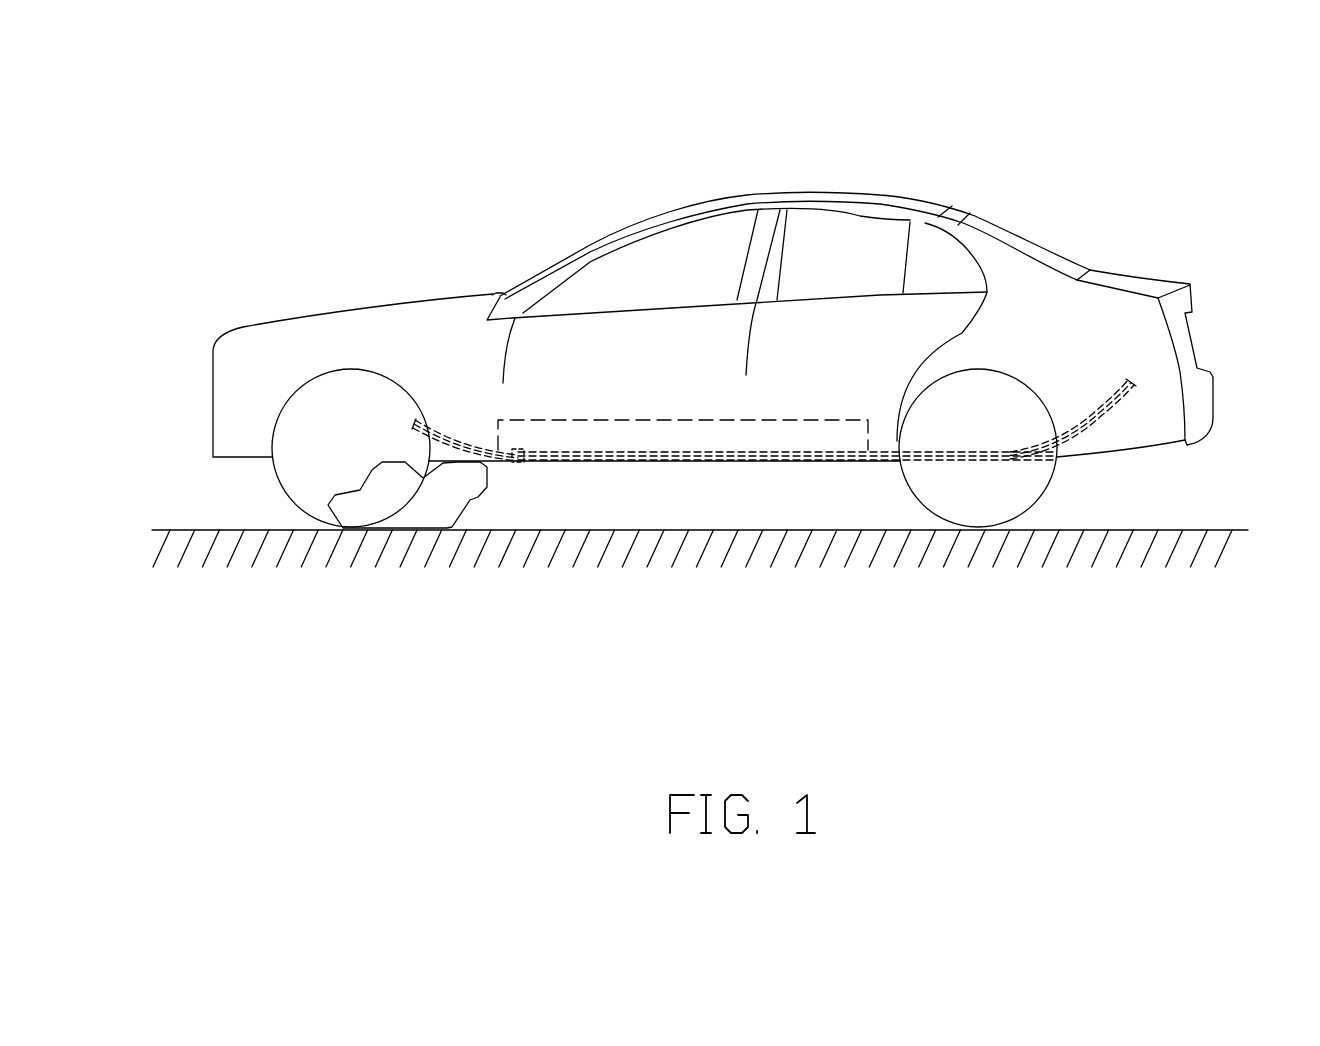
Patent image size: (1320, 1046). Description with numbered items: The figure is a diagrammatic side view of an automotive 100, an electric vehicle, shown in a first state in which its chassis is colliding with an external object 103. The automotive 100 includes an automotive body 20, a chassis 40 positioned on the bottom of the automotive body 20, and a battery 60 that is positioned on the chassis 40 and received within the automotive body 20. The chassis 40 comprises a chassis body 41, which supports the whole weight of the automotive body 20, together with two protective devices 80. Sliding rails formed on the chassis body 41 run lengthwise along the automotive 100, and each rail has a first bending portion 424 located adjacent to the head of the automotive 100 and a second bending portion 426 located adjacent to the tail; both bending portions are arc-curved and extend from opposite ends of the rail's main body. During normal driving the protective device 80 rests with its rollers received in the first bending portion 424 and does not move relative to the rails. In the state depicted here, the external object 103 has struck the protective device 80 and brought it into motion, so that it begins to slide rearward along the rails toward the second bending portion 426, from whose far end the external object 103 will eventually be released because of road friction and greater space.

The automotive 100 is at (742, 108).
The automotive body 20 is at (1123, 282).
The chassis 40 is at (783, 466).
The chassis body 41 is at (825, 455).
The first bending portion 424 is at (414, 426).
The second bending portion 426 is at (1120, 412).
The battery 60 is at (685, 437).
The protective device 80 is at (519, 468).
The external object 103 is at (434, 507).